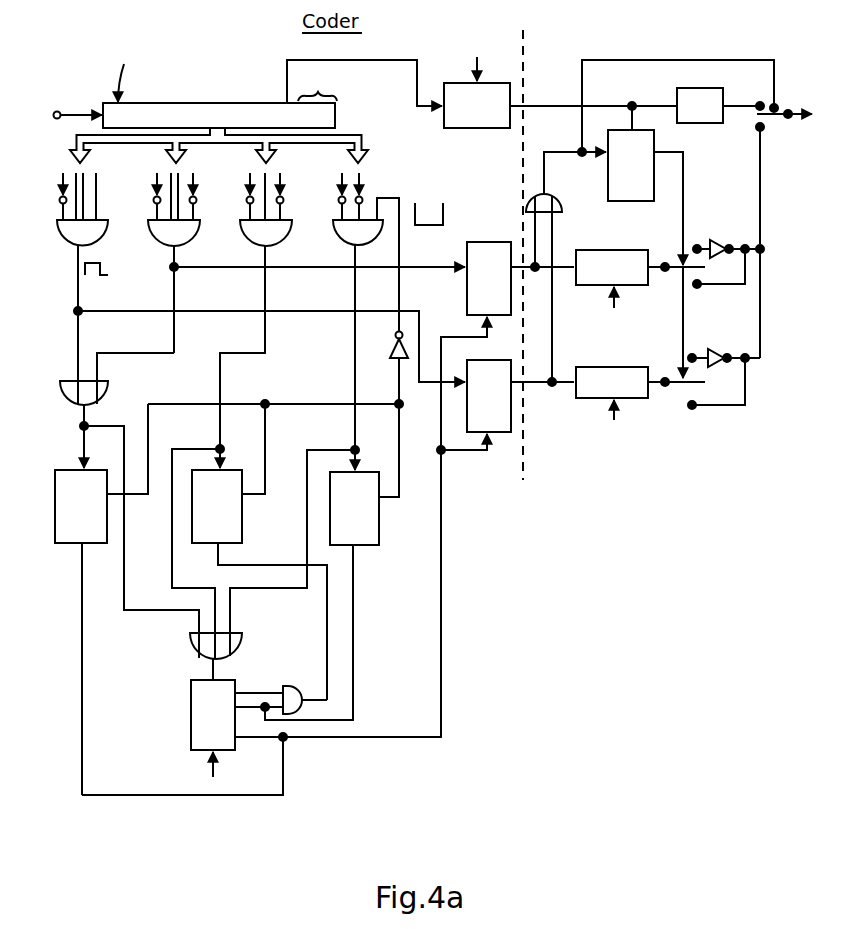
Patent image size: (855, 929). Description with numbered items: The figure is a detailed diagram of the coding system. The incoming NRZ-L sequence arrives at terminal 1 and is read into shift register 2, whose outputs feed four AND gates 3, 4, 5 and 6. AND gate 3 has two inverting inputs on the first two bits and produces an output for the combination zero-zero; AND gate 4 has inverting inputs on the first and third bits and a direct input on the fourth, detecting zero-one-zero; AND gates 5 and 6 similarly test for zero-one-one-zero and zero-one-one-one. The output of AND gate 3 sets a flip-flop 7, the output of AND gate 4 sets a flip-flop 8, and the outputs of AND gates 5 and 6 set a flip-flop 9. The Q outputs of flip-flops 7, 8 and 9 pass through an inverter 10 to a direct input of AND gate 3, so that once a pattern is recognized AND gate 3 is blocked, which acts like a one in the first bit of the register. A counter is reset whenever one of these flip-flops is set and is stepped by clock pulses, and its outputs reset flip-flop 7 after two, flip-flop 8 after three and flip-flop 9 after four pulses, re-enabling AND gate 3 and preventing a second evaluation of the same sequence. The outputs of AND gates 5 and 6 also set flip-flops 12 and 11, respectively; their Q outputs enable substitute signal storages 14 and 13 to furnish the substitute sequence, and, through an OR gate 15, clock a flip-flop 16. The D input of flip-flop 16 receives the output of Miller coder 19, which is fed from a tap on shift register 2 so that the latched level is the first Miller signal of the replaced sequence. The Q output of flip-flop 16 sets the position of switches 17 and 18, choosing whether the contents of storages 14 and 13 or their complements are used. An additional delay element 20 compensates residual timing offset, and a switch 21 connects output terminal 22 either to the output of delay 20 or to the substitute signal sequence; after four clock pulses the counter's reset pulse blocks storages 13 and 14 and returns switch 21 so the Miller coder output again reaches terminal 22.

The terminal 1 is at (72, 103).
The shift register 2 is at (256, 110).
The AND gate 3 is at (382, 211).
The AND gate 4 is at (260, 211).
The AND gate 5 is at (168, 211).
The AND gate 6 is at (75, 224).
The flip-flop 7 is at (332, 562).
The flip-flop 8 is at (259, 552).
The flip-flop 9 is at (101, 599).
The inverter 10 is at (284, 496).
The flip-flop 11 is at (509, 396).
The flip-flop 12 is at (509, 278).
The substitute signal storage 13 is at (640, 380).
The substitute signal storage 14 is at (640, 266).
The OR gate 15 is at (566, 269).
The flip-flop 16 is at (676, 219).
The switch 17 is at (713, 262).
The switch 18 is at (710, 379).
The Miller coder 19 is at (560, 99).
The additional delay element 20 is at (720, 95).
The switch 21 is at (775, 240).
The output terminal 22 is at (784, 102).